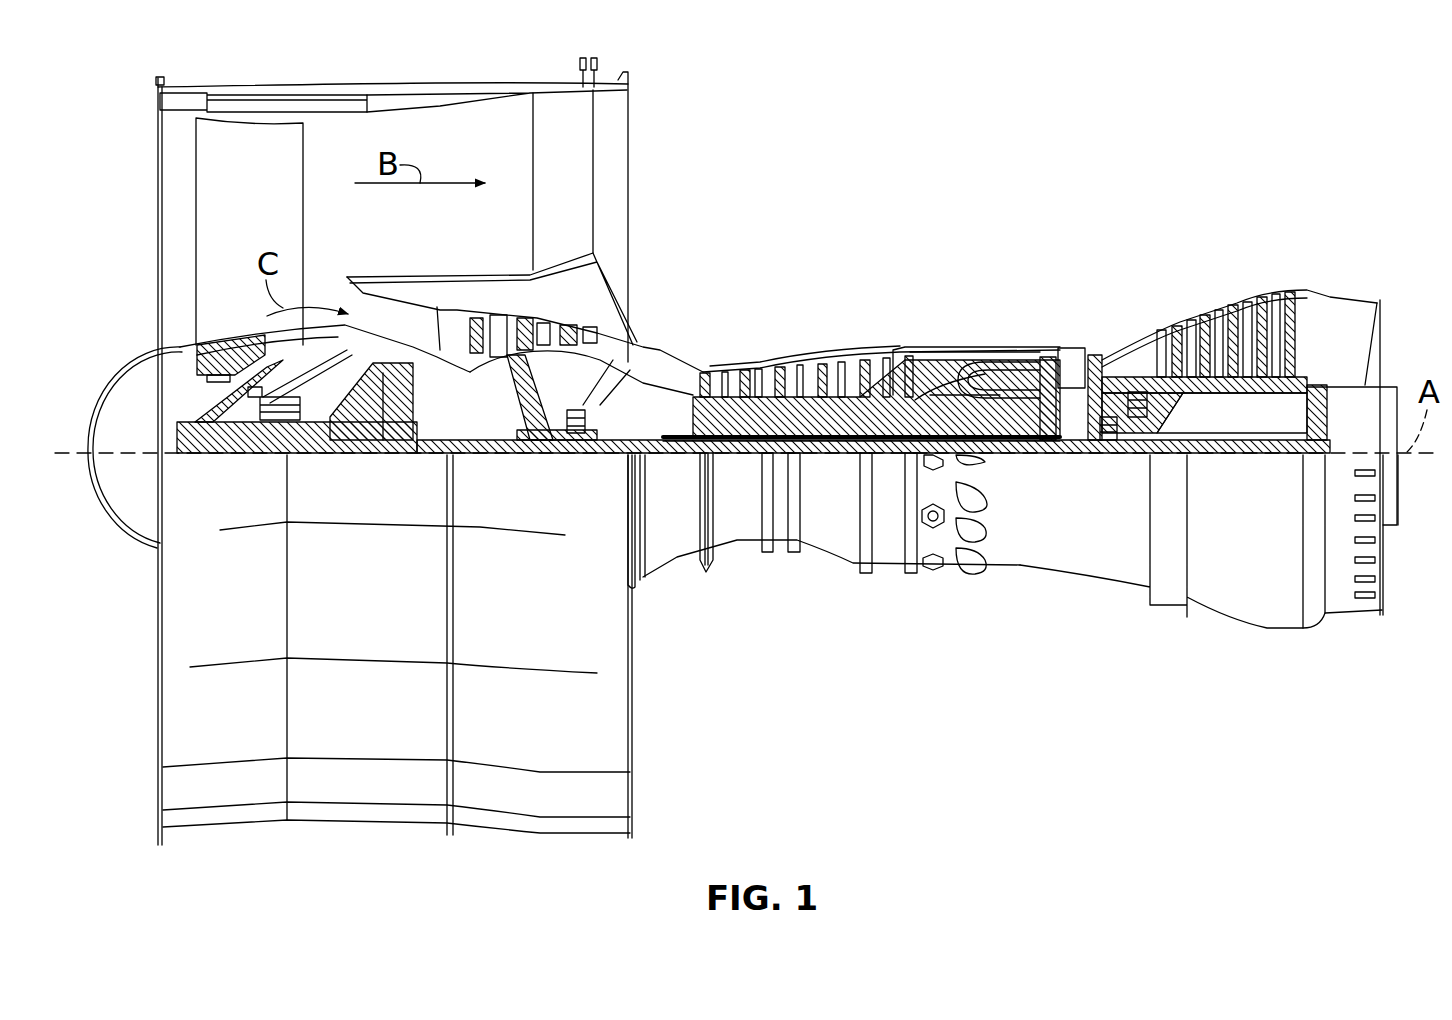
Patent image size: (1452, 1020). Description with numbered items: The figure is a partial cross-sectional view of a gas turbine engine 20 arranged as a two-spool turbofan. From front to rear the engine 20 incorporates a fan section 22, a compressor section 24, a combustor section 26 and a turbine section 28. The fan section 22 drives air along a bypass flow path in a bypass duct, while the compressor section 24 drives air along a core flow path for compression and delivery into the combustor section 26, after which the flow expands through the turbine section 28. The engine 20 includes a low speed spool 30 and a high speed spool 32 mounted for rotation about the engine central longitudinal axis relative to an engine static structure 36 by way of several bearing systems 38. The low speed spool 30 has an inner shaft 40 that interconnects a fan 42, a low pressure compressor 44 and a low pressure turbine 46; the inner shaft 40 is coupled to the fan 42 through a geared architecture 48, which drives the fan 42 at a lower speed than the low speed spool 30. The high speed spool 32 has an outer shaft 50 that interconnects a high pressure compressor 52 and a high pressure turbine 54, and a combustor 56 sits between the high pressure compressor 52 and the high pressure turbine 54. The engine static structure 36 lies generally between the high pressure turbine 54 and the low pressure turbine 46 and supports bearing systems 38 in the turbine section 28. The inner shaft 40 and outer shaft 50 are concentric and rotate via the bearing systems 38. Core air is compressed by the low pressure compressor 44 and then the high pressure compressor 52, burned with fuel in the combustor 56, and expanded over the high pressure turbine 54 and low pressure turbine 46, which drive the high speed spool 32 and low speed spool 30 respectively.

The gas turbine engine 20 is at (1205, 125).
The fan section 22 is at (277, 72).
The compressor section 24 is at (820, 245).
The combustor section 26 is at (988, 245).
The turbine section 28 is at (1130, 285).
The low speed spool 30 is at (853, 458).
The high speed spool 32 is at (903, 400).
The engine static structure 36 is at (893, 575).
The bearing systems 38 is at (262, 405).
The inner shaft 40 is at (645, 450).
The fan 42 is at (272, 210).
The low pressure compressor 44 is at (543, 335).
The low pressure turbine 46 is at (1235, 310).
The geared architecture 48 is at (397, 420).
The outer shaft 50 is at (1022, 433).
The high pressure compressor 52 is at (810, 420).
The high pressure turbine 54 is at (1070, 347).
The combustor 56 is at (993, 370).